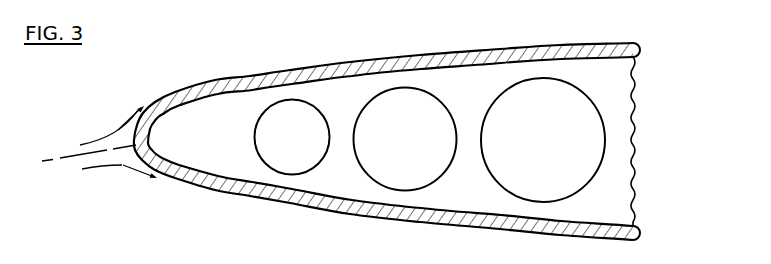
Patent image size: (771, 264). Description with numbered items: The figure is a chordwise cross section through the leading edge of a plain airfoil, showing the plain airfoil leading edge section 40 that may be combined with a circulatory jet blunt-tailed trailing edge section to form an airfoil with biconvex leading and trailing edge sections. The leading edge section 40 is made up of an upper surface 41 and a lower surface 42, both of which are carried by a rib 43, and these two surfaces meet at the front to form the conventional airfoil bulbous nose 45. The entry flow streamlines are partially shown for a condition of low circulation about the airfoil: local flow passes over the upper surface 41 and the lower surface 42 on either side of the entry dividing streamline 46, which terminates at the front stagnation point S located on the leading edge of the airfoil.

The plain airfoil leading edge section 40 is at (387, 125).
The upper surface 41 is at (330, 63).
The lower surface 42 is at (308, 207).
The rib 43 is at (623, 161).
The bulbous nose 45 is at (136, 153).
The entry dividing streamline 46 is at (62, 153).
The front stagnation point S is at (119, 129).